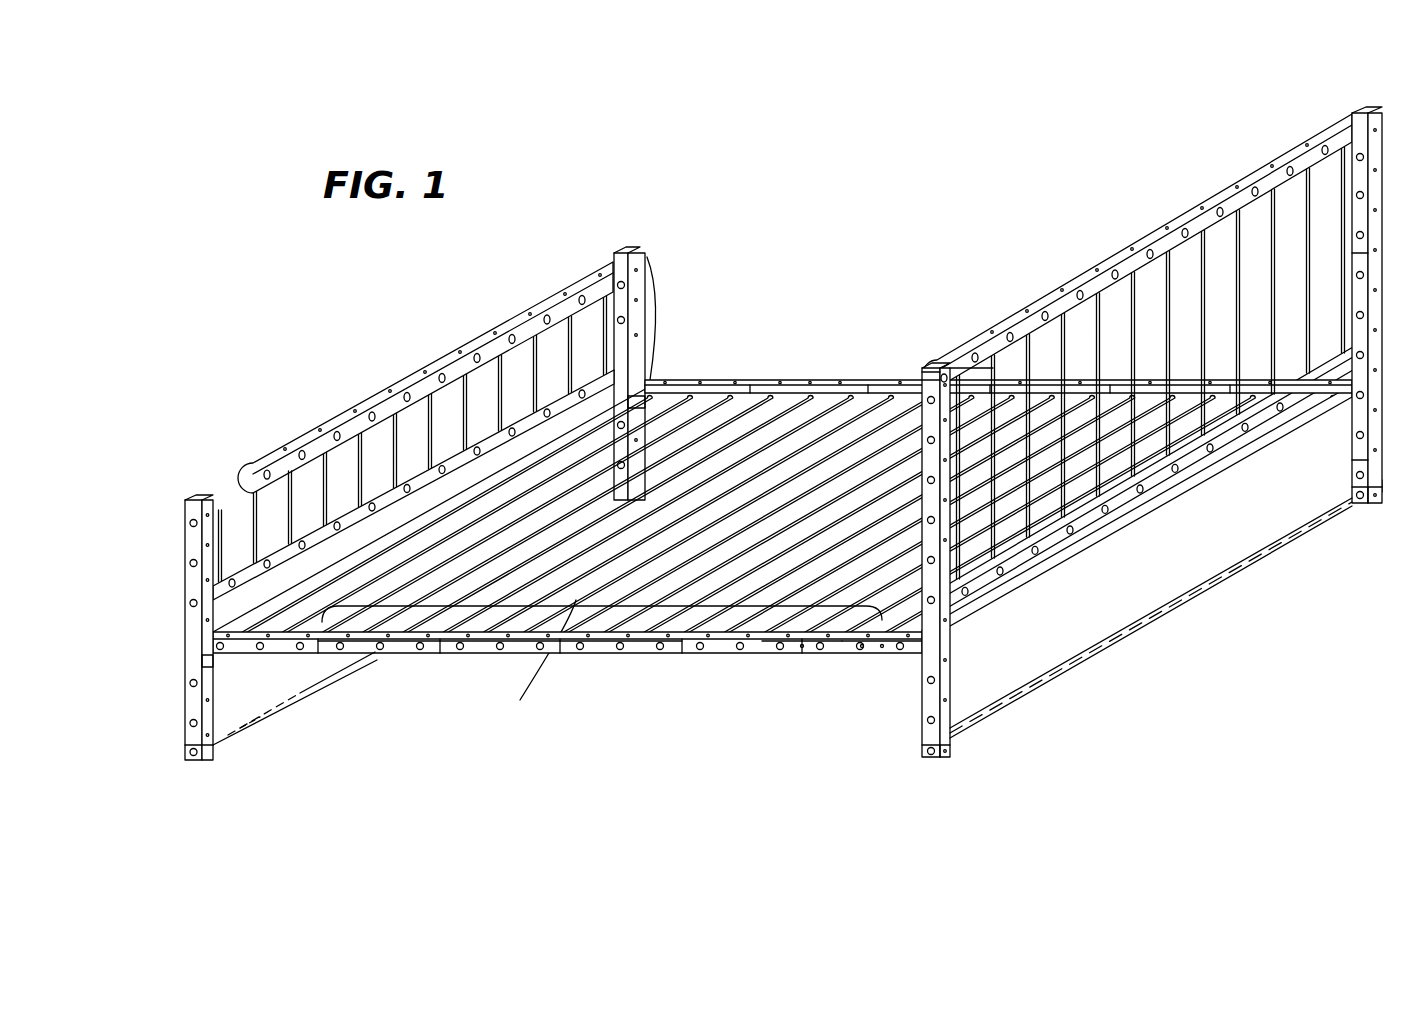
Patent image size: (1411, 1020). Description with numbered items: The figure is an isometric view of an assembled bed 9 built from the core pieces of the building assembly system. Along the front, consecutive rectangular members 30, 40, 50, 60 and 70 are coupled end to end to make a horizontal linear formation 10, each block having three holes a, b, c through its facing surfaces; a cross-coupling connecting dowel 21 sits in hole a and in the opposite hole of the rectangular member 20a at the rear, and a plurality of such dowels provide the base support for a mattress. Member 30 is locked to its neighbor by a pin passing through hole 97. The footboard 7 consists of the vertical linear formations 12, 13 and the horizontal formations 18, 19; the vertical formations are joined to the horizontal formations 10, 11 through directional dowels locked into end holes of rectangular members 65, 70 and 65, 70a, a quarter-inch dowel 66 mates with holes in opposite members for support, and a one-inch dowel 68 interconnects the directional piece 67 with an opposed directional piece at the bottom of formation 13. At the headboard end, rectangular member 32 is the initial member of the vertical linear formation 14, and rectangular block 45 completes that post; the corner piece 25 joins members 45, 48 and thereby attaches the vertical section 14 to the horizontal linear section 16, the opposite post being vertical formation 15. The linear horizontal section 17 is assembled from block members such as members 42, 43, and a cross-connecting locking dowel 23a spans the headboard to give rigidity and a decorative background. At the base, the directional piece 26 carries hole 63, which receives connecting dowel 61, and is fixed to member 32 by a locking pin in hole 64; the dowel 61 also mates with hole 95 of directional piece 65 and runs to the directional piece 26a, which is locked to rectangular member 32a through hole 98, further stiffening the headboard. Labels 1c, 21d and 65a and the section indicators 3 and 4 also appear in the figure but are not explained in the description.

The footboard 7 is at (407, 392).
The bed 9 is at (774, 393).
The horizontal linear formation 10 is at (643, 592).
The horizontal formation 11 is at (998, 344).
The vertical linear formation 12 is at (214, 663).
The vertical linear formation 13 is at (656, 322).
The linear formation 14 is at (956, 500).
The vertical formation 15 is at (1325, 358).
The horizontal linear section 16 is at (1137, 346).
The linear horizontal section 17 is at (1180, 493).
The linear horizontal formation 18 is at (412, 372).
The linear horizontal formation 19 is at (300, 573).
The rectangular member 20a is at (1150, 481).
The cross-coupling connecting dowel 21 is at (900, 655).
The front rail segment end 21d is at (840, 607).
The cross-connecting locking dowel 23a is at (993, 363).
The corner piece 25 is at (923, 368).
The directional piece 26 is at (946, 757).
The directional piece 26a is at (1365, 505).
The rectangular member 30 is at (717, 645).
The rectangular member 32 is at (1151, 618).
The rectangular member 32a is at (1352, 455).
The member 40 is at (603, 605).
The rectangular block member 42 is at (1013, 560).
The member 43 is at (1083, 475).
The rectangular block 45 is at (915, 380).
The rectangular member 48 is at (950, 353).
The member 50 is at (484, 645).
The member 60 is at (403, 645).
The connecting dowel 61 is at (1187, 600).
The hole 63 is at (928, 757).
The hole 64 is at (950, 745).
The directional piece 65 is at (208, 665).
The post bracket plate 65a is at (618, 400).
The dowel 66 is at (305, 495).
The directional piece 67 is at (210, 753).
The dowel 68 is at (255, 722).
The member 70 is at (285, 648).
The rectangular member 70a is at (660, 376).
The hole 95 is at (1340, 542).
The hole 97 is at (782, 640).
The hole 98 is at (1350, 495).
The platform slat 1c is at (537, 665).
The section line 3 is at (903, 378).
The section line 4 is at (762, 633).
The hole a is at (802, 640).
The hole b is at (863, 645).
The hole c is at (882, 612).